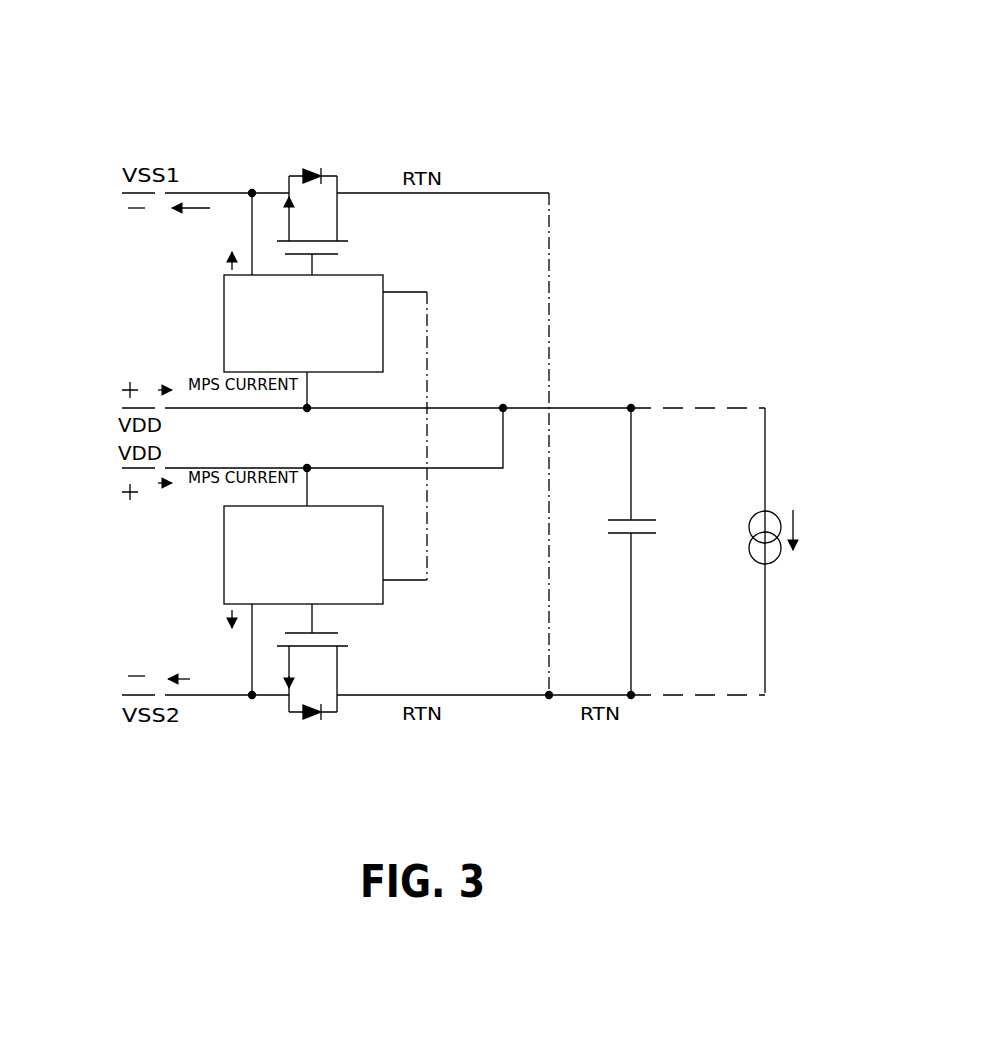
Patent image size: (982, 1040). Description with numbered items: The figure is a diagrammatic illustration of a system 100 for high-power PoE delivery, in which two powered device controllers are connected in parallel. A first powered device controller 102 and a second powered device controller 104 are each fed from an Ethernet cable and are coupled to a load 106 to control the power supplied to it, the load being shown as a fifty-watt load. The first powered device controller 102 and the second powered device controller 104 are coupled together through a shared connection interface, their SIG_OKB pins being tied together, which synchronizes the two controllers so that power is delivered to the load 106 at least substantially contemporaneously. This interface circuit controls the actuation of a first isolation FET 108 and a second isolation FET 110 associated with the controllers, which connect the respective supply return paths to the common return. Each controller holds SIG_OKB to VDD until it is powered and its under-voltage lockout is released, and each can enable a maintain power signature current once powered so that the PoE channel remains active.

The system 100 is at (300, 58).
The first powered device controller 102 is at (224, 345).
The second powered device controller 104 is at (224, 598).
The load 106 is at (812, 533).
The first isolation FET 108 is at (303, 176).
The second isolation FET 110 is at (297, 713).